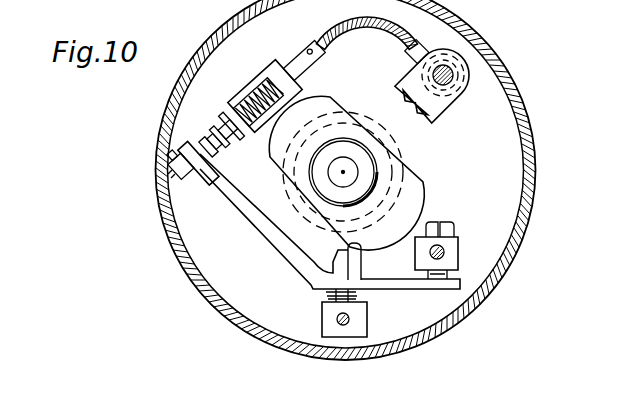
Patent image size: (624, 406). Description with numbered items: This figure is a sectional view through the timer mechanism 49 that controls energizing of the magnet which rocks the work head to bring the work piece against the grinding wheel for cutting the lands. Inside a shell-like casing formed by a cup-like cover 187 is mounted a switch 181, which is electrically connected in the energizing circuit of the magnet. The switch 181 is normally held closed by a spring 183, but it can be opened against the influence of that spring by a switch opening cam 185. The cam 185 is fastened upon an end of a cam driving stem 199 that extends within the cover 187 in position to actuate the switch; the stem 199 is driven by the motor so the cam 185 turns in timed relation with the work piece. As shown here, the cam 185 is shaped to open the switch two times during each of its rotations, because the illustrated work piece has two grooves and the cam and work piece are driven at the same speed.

The timer mechanism 49 is at (148, 178).
The switch 181 is at (208, 131).
The spring 183 is at (328, 293).
The switch opening cam 185 is at (405, 185).
The cup-like cover 187 is at (528, 150).
The cam driving stem 199 is at (343, 172).